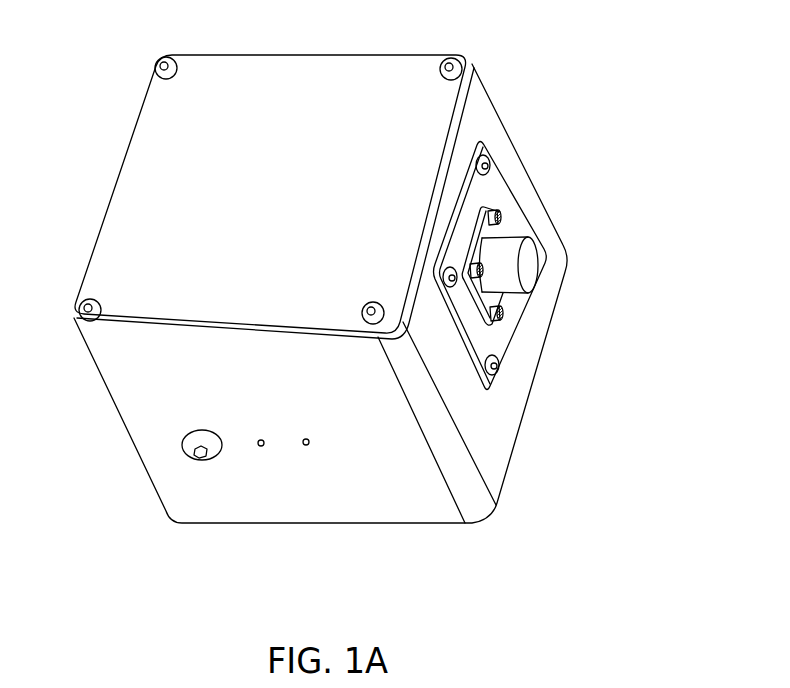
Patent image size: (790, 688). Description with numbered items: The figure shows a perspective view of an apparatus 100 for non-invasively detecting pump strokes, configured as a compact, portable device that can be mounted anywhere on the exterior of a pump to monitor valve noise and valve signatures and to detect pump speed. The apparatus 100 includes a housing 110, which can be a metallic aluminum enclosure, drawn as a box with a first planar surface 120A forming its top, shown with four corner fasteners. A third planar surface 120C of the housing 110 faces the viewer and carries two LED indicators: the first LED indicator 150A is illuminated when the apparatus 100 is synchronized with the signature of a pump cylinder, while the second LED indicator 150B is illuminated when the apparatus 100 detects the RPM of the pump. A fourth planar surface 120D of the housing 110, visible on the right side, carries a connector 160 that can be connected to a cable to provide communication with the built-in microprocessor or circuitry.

The apparatus 100 is at (376, 301).
The housing 110 is at (498, 111).
The first planar surface 120A is at (353, 68).
The third planar surface 120C is at (178, 503).
The fourth planar surface 120D is at (552, 243).
The first LED indicator 150A is at (261, 447).
The second LED indicator 150B is at (306, 445).
The connector 160 is at (523, 269).